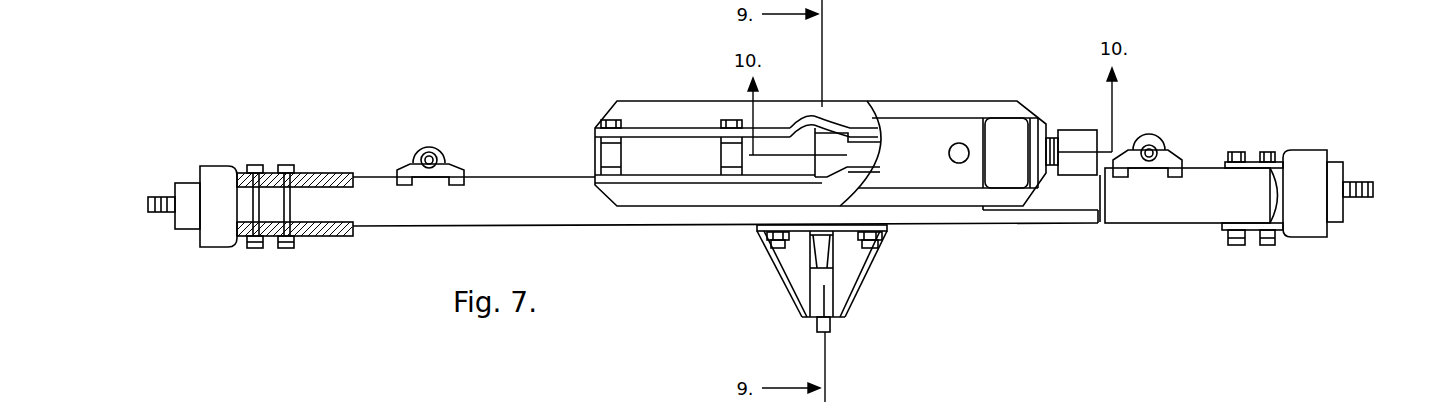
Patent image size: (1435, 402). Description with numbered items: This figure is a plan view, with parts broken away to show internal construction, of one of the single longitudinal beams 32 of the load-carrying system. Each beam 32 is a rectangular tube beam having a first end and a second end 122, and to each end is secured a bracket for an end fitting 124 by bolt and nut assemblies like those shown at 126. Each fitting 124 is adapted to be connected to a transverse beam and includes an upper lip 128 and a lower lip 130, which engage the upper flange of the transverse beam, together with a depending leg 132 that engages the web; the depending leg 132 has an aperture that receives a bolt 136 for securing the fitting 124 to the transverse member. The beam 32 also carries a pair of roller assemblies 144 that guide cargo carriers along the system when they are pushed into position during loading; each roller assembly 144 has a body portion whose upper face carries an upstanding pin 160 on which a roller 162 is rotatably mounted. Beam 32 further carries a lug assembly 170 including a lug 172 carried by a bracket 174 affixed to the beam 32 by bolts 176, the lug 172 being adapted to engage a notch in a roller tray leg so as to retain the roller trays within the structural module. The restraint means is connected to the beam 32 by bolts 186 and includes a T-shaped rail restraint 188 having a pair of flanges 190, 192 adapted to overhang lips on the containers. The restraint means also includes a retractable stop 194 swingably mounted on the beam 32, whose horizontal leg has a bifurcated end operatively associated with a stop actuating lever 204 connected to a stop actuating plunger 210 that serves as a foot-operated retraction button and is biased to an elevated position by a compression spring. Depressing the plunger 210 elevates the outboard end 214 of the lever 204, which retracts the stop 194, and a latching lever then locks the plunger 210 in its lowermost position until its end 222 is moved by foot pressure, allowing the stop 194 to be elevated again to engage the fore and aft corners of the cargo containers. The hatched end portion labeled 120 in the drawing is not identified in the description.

The longitudinal beam 32 is at (522, 172).
The end tube 120 is at (327, 178).
The second end 122 is at (1283, 240).
The fitting 124 is at (226, 165).
The bolt and nut assemblies 126 is at (287, 170).
The upper lip 128 is at (203, 240).
The lower lip 130 is at (186, 183).
The depending leg 132 is at (175, 185).
The bolt 136 is at (153, 212).
The roller assembly 144 is at (461, 172).
The upstanding pin 160 is at (424, 155).
The roller 162 is at (432, 147).
The lug assembly 170 is at (870, 282).
The lug 172 is at (830, 322).
The bracket 174 is at (784, 270).
The bolts 176 is at (882, 240).
The bolts 186 is at (606, 120).
The rail restraint 188 is at (1016, 101).
The flange 190 is at (982, 210).
The flange 192 is at (903, 100).
The retractable stop 194 is at (818, 240).
The stop actuating lever 204 is at (829, 142).
The stop actuating plunger 210 is at (962, 143).
The outboard end 214 is at (813, 150).
The end 222 is at (1076, 130).